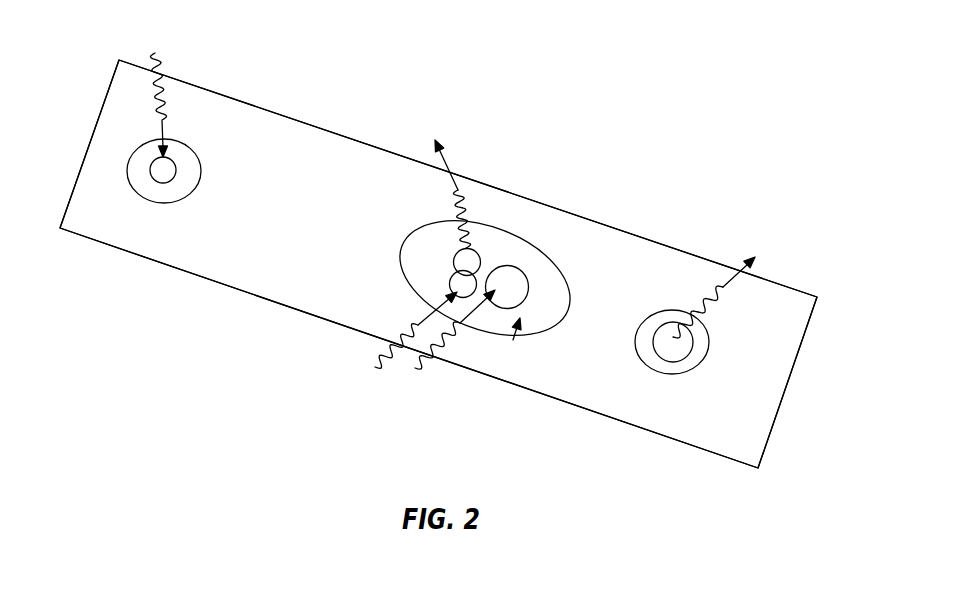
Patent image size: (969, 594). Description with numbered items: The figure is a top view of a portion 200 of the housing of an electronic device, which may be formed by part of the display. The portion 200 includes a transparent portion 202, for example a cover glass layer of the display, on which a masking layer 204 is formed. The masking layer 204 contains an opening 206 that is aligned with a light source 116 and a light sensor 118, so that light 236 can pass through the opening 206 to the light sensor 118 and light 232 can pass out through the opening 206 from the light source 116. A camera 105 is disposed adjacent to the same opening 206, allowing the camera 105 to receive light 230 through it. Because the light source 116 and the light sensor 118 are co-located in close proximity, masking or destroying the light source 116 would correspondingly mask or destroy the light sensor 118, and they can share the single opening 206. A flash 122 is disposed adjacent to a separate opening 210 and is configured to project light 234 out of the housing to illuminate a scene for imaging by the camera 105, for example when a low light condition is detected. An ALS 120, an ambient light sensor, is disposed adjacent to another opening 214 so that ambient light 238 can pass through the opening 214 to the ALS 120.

The portion of the housing 200 is at (738, 81).
The masking layer 204 is at (678, 275).
The transparent portion 202 is at (542, 267).
The opening 214 is at (132, 167).
The ALS 120 is at (167, 177).
The light 238 is at (147, 83).
The light source 116 is at (472, 248).
The light sensor 118 is at (456, 291).
The camera 105 is at (503, 266).
The light 232 is at (447, 172).
The light 236 is at (375, 368).
The light 230 is at (417, 369).
The opening 206 is at (513, 340).
The opening 210 is at (687, 376).
The flash 122 is at (663, 345).
The light 234 is at (708, 297).